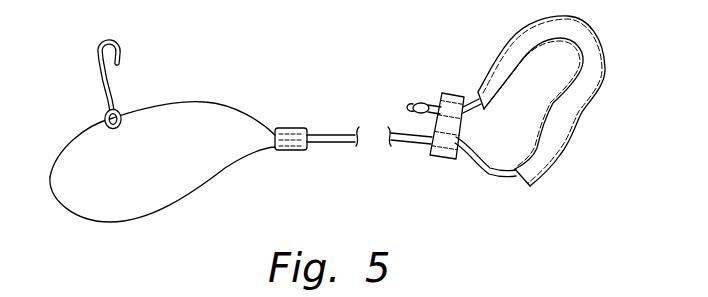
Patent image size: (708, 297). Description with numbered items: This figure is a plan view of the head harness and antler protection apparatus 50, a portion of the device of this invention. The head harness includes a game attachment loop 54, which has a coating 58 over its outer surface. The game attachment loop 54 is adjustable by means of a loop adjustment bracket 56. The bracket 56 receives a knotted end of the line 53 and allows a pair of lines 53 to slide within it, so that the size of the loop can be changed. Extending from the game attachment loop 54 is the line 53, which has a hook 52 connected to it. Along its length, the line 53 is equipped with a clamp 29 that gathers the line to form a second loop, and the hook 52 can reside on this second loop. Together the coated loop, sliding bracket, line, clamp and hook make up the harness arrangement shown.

The clamp 29 is at (292, 127).
The head harness and antler protection apparatus 50 is at (392, 196).
The hook 52 is at (117, 92).
The line 53 is at (202, 184).
The game attachment loop 54 is at (476, 162).
The loop adjustment bracket 56 is at (452, 92).
The coating 58 is at (603, 62).